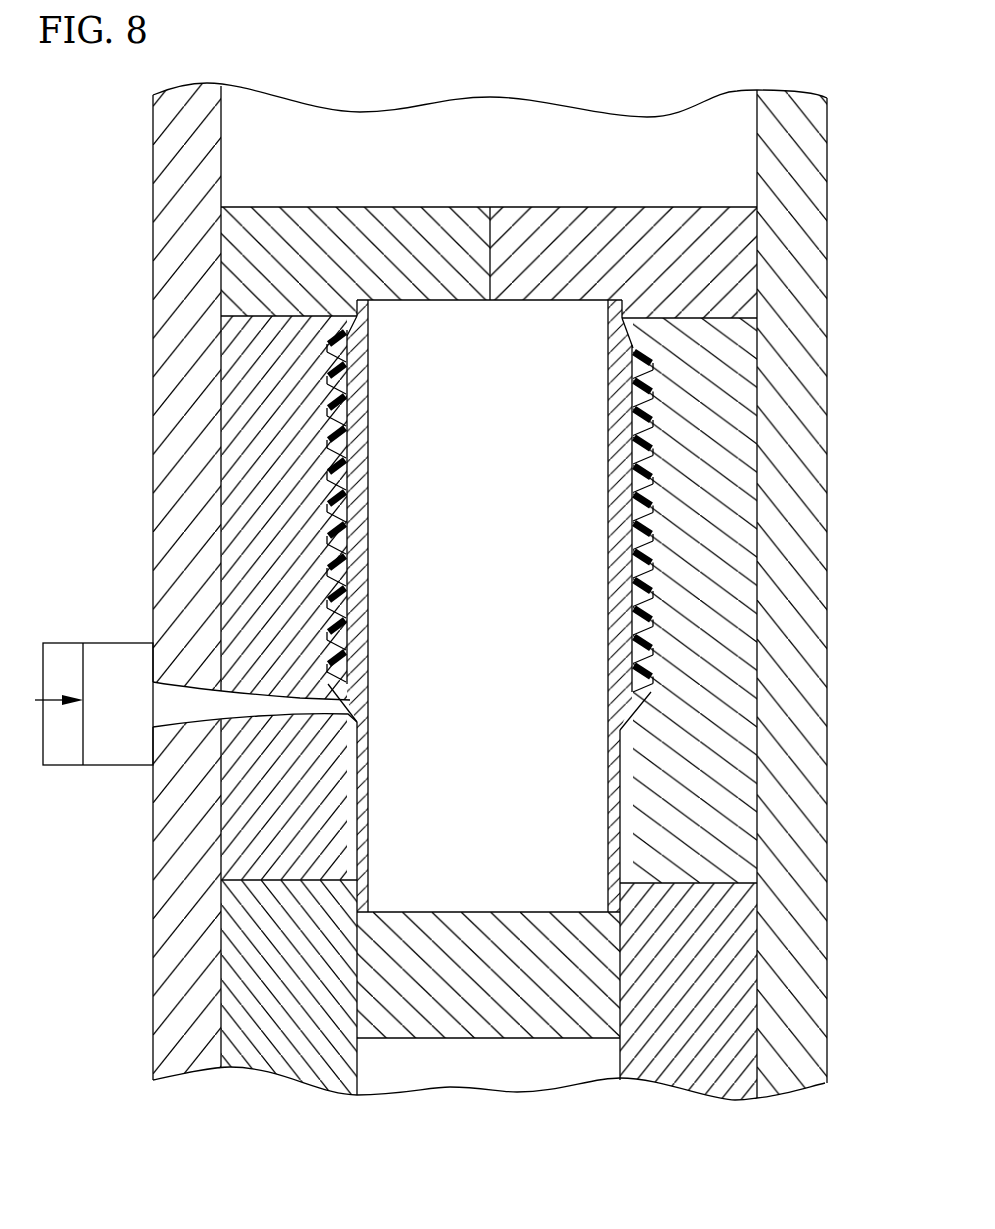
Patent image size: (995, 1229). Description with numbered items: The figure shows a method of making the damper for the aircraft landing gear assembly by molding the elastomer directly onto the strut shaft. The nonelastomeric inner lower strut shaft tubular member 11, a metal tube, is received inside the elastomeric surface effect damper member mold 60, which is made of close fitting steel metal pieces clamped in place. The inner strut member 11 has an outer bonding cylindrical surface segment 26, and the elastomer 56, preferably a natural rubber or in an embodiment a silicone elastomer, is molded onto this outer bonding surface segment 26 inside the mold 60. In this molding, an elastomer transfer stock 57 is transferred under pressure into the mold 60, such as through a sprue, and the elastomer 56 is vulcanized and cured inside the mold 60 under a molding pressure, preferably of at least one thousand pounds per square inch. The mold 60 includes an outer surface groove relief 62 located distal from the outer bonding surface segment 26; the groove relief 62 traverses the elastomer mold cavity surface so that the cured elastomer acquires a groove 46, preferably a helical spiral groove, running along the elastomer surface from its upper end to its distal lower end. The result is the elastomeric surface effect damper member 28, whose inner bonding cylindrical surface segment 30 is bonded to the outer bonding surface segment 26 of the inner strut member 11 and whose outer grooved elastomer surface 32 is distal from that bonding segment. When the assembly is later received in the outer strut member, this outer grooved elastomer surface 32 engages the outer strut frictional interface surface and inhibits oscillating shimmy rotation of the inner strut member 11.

The nonelastomeric inner lower strut shaft tubular member 11 is at (607, 870).
The outer bonding cylindrical surface segment 26 is at (337, 588).
The elastomeric surface effect damper member 28 is at (655, 500).
The inner bonding cylindrical surface segment 30 is at (632, 547).
The outer grooved elastomer surface 32 is at (657, 410).
The elastomer surface groove 46 is at (333, 430).
The elastomer 56 is at (335, 637).
The elastomer transfer stock 57 is at (120, 733).
The elastomeric surface effect damper member mold 60 is at (132, 882).
The outer surface groove relief 62 is at (337, 563).